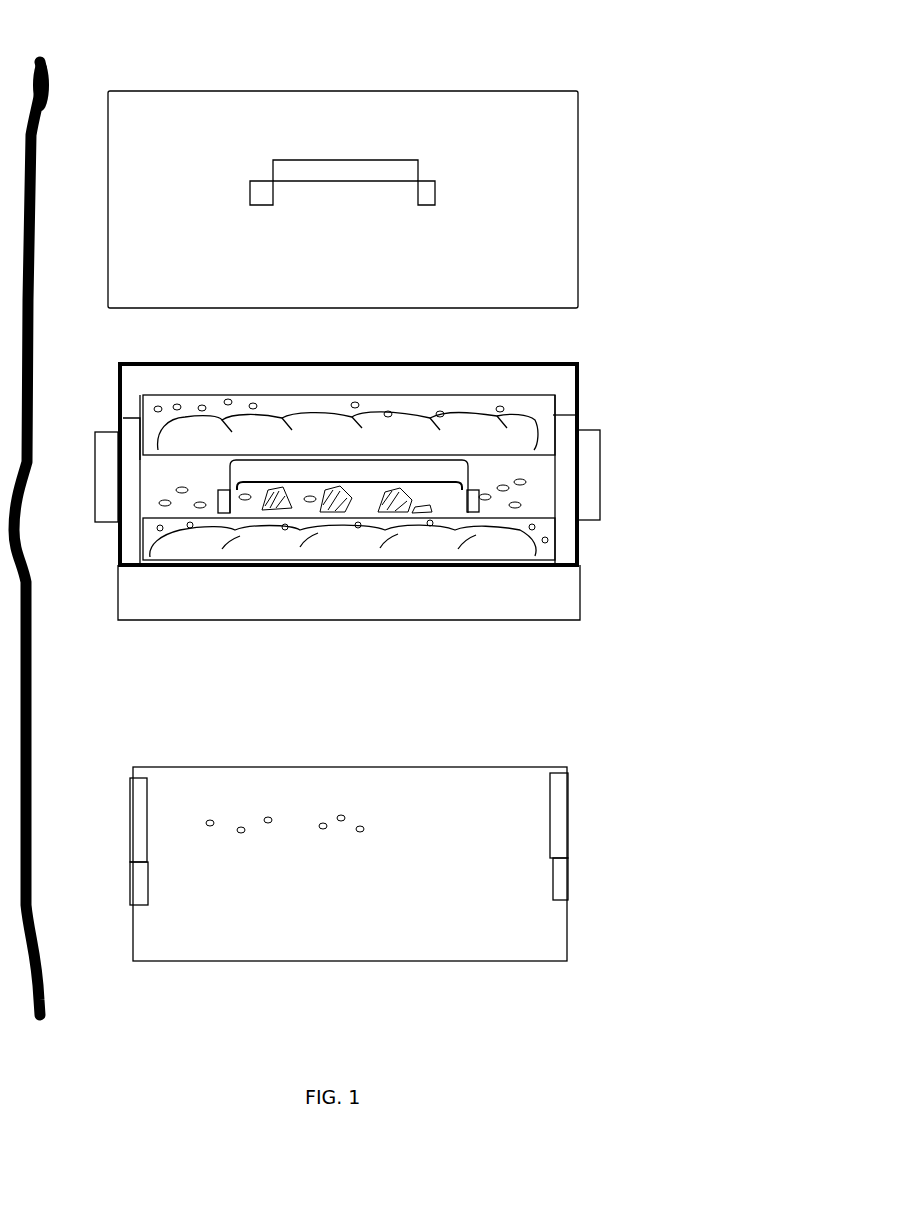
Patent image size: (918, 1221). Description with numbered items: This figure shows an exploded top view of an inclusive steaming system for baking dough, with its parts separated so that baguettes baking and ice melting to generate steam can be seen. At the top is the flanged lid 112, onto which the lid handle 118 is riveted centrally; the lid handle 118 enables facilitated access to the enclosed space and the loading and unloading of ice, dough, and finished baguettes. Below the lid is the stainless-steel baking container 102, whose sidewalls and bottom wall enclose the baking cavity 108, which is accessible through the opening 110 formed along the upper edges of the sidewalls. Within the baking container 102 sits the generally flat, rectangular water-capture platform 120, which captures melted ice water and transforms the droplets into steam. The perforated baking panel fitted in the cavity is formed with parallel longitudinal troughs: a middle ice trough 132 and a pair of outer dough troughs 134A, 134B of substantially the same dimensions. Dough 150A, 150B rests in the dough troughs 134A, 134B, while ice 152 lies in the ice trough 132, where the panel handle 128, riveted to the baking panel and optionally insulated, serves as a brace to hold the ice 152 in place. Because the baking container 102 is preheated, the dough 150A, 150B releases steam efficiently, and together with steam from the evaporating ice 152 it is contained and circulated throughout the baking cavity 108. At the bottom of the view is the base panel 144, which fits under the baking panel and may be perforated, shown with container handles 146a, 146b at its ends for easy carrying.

The baking container 102 is at (165, 625).
The baking cavity 108 is at (125, 362).
The opening 110 is at (582, 352).
The flanged lid 112 is at (140, 66).
The lid handle 118 is at (337, 162).
The water-capture platform 120 is at (583, 392).
The panel handle 128 is at (456, 446).
The ice trough 132 is at (137, 452).
The dough trough 134A is at (273, 391).
The dough trough 134B is at (565, 550).
The dough 150A is at (183, 413).
The dough 150B is at (420, 548).
The ice 152 is at (340, 496).
The base panel 144 is at (183, 982).
The container handle 146a is at (137, 800).
The container handle 146b is at (565, 805).